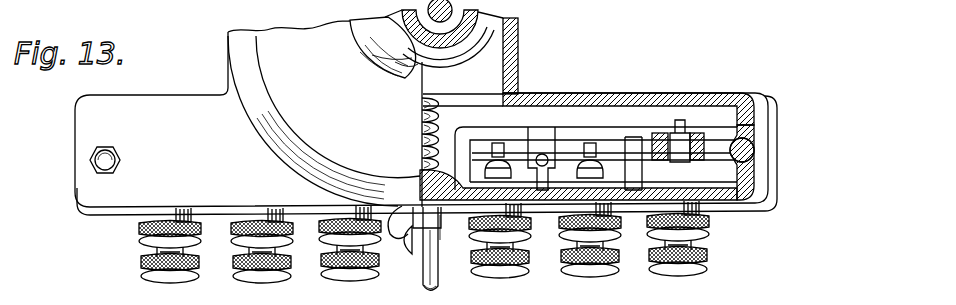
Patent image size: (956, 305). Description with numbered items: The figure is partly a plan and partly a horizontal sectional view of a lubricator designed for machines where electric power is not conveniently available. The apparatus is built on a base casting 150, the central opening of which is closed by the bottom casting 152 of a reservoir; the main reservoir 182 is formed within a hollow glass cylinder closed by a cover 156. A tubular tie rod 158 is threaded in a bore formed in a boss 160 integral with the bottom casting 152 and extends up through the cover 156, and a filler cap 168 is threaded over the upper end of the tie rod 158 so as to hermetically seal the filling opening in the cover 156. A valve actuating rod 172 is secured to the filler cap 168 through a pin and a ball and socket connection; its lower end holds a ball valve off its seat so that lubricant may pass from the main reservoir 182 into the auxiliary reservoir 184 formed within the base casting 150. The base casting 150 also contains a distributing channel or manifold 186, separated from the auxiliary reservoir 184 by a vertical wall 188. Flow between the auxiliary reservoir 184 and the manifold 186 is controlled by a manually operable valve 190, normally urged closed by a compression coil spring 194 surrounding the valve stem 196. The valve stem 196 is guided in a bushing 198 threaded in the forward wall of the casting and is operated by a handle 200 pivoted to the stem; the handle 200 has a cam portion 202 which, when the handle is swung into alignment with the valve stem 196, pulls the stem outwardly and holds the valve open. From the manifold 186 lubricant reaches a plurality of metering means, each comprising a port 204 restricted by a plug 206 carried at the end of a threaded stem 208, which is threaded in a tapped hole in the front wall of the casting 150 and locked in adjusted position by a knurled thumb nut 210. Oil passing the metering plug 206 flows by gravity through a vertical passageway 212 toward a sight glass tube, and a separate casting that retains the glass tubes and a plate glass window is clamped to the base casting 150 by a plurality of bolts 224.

The base casting 150 is at (758, 157).
The bottom casting 152 is at (518, 31).
The cover 156 is at (317, 143).
The tubular tie rod 158 is at (518, 44).
The boss 160 is at (518, 55).
The filler cap 168 is at (377, 62).
The valve actuating rod 172 is at (380, 50).
The main reservoir 182 is at (408, 78).
The auxiliary reservoir 184 is at (470, 62).
The distributing channel or manifold 186 is at (664, 114).
The vertical wall 188 is at (596, 150).
The manually operable valve 190 is at (422, 122).
The compression coil spring 194 is at (460, 230).
The valve stem 196 is at (413, 257).
The bushing 198 is at (406, 204).
The handle 200 is at (431, 288).
The cam portion 202 is at (396, 240).
The port 204 is at (501, 143).
The plug 206 is at (513, 160).
The threaded stem 208 is at (148, 256).
The knurled thumb nut 210 is at (137, 233).
The vertical passageway 212 is at (548, 108).
The bolts 224 is at (92, 162).